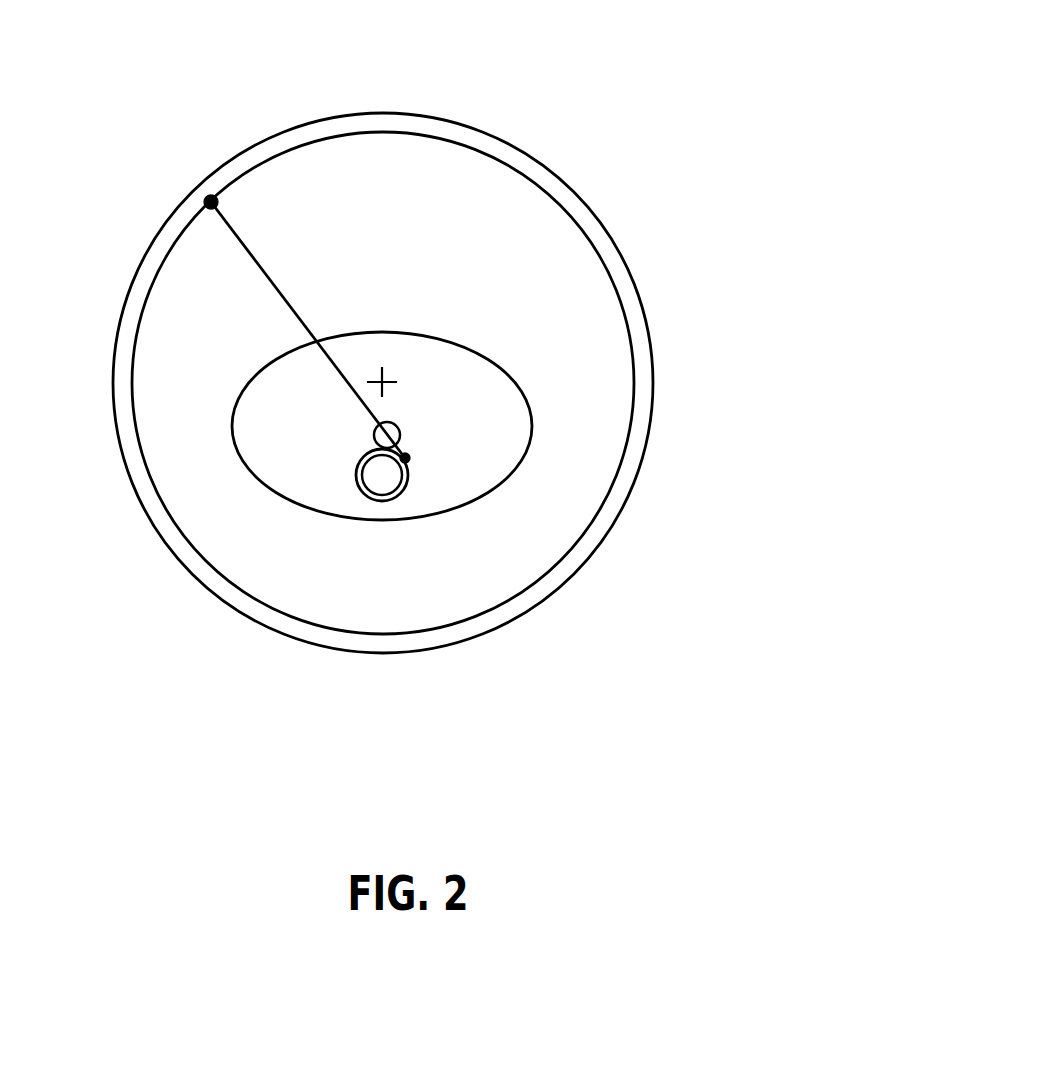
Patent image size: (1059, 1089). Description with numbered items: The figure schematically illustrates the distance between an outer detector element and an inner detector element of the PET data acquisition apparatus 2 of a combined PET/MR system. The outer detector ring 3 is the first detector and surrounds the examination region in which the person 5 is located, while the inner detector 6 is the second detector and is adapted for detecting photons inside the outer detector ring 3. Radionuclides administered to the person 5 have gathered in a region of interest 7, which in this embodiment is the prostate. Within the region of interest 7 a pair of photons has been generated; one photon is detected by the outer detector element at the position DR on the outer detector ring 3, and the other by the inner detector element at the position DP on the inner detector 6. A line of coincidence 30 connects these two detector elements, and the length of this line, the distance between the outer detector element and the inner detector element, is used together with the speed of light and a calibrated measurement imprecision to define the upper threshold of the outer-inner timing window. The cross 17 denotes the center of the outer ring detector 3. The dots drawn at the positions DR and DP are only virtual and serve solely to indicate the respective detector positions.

The PET data acquisition apparatus 2 is at (647, 91).
The outer detector ring 3 is at (653, 400).
The line of coincidence 30 is at (273, 290).
The cross 17 is at (383, 380).
The person 5 is at (282, 505).
The region of interest 7 is at (396, 422).
The inner detector 6 is at (380, 500).
The position of outer detector element DR is at (214, 201).
The position of inner detector element DP is at (409, 455).